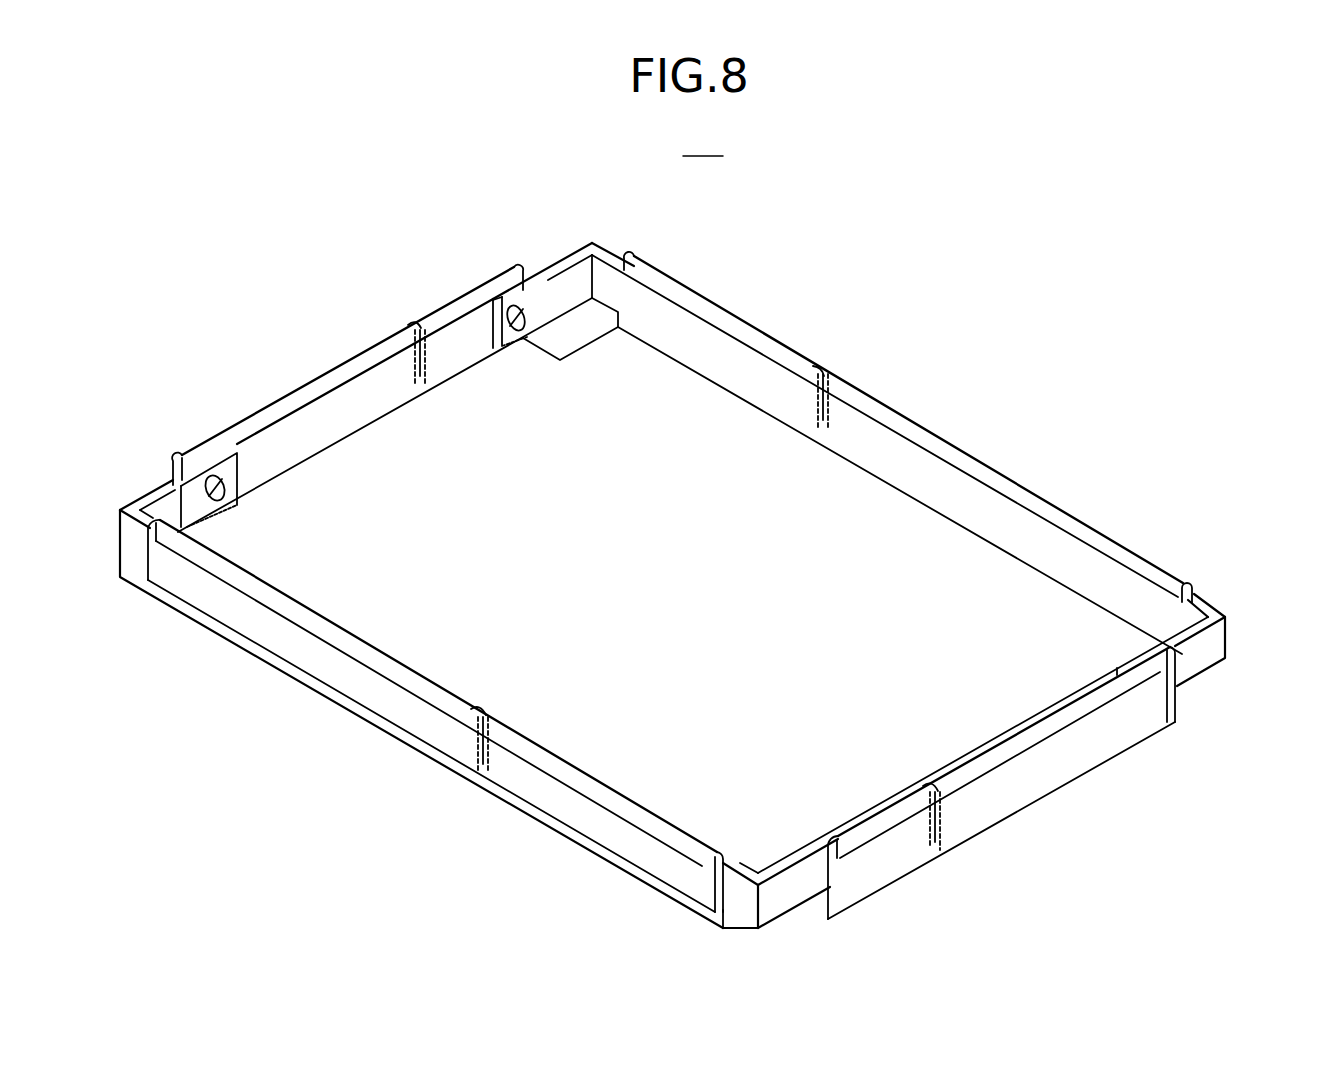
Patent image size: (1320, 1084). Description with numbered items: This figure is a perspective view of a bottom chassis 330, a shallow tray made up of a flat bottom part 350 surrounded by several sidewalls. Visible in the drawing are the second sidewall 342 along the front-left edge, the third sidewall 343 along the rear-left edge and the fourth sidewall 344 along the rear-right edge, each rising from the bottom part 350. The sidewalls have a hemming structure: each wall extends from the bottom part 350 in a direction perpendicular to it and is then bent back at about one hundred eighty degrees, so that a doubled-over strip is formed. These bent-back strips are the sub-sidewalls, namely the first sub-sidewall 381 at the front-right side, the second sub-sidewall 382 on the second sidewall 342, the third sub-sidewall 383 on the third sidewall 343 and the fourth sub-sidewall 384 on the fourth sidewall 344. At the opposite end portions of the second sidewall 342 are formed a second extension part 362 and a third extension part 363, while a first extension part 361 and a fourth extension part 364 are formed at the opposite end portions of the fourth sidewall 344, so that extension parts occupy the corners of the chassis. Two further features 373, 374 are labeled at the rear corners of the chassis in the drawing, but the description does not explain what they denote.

The bottom chassis 330 is at (886, 508).
The second sidewall 342 is at (372, 722).
The third sidewall 343 is at (352, 388).
The fourth sidewall 344 is at (955, 478).
The bottom part 350 is at (913, 592).
The first extension part 361 is at (1187, 672).
The second extension part 362 is at (783, 895).
The third extension part 363 is at (167, 500).
The fourth extension part 364 is at (580, 277).
The fastening hole 373 is at (227, 481).
The fastening hole 374 is at (547, 303).
The first sub-sidewall 381 is at (975, 808).
The second sub-sidewall 382 is at (295, 650).
The third sub-sidewall 383 is at (295, 400).
The fourth sub-sidewall 384 is at (1205, 598).